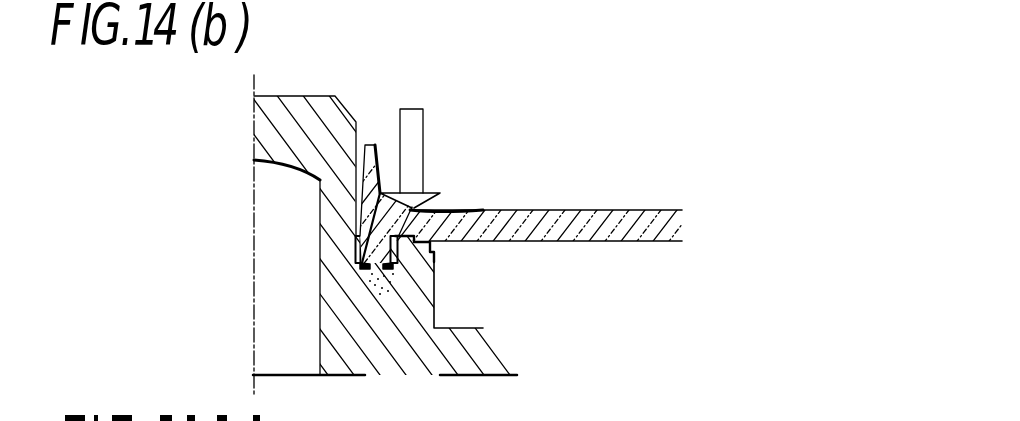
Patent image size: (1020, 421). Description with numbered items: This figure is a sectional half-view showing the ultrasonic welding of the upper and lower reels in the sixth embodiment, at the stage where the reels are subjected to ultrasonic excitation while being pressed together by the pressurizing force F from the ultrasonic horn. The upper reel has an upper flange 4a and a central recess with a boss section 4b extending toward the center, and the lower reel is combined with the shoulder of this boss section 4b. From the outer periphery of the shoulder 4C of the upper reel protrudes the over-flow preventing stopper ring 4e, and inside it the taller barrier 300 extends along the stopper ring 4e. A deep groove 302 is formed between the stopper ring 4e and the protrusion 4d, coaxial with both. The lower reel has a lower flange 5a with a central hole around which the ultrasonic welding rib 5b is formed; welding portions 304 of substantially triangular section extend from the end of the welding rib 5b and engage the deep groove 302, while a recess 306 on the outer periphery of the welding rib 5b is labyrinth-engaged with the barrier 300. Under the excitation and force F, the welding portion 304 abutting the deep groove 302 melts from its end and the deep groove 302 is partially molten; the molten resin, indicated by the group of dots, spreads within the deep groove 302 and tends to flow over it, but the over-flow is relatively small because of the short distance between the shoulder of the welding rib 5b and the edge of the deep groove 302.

The upper flange 4a is at (403, 210).
The boss section 4b is at (465, 293).
The shoulder 4C is at (314, 257).
The protrusion 4d is at (305, 139).
The over-flow preventing stopper ring 4e is at (443, 254).
The lower flange 5a is at (603, 207).
The ultrasonic welding rib 5b is at (399, 188).
The barrier 300 is at (489, 179).
The deep groove 302 is at (318, 304).
The welding portion 304 is at (398, 326).
The recess 306 is at (436, 182).
The pressurizing force F is at (415, 77).